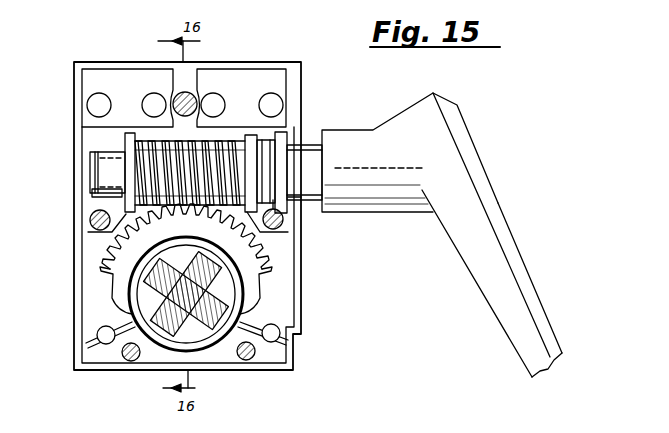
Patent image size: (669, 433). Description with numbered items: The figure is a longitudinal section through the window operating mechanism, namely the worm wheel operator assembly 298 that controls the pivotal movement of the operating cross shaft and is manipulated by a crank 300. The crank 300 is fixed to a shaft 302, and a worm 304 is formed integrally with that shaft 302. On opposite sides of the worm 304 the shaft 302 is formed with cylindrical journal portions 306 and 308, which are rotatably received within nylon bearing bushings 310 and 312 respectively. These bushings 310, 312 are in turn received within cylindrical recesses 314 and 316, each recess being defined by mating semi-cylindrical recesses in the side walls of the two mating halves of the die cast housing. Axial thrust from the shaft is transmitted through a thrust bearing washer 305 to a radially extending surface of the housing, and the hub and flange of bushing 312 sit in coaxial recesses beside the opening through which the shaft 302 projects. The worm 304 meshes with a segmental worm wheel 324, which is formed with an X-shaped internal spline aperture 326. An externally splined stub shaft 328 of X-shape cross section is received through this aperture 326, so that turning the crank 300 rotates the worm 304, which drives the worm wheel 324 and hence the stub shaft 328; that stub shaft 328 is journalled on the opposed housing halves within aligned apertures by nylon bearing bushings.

The worm wheel operator assembly 298 is at (72, 142).
The crank 300 is at (500, 246).
The shaft 302 is at (304, 143).
The worm 304 is at (204, 137).
The thrust bearing washer 305 is at (242, 137).
The journal portion 306 is at (92, 149).
The journal portion 308 is at (298, 172).
The nylon bearing bushing 310 is at (124, 211).
The nylon bearing bushing 312 is at (297, 206).
The cylindrical recess 314 is at (100, 191).
The cylindrical recess 316 is at (274, 230).
The segmental worm wheel 324 is at (107, 258).
The X-shaped internal spline aperture 326 is at (220, 296).
The externally splined stub shaft 328 is at (152, 308).